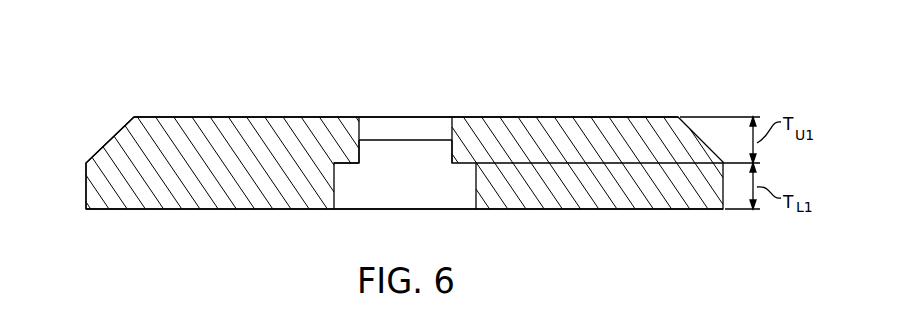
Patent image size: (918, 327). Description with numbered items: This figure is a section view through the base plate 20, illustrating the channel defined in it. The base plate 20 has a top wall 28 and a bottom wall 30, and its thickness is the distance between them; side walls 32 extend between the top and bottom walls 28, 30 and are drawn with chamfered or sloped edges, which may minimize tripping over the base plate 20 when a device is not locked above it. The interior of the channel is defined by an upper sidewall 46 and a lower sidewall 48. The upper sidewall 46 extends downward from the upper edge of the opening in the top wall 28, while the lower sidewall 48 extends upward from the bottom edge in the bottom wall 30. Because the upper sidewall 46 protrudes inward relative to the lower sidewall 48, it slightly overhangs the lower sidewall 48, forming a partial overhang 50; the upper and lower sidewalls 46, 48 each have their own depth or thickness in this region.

The base plate 20 is at (162, 82).
The top wall 28 is at (251, 117).
The bottom wall 30 is at (168, 209).
The side walls 32 is at (86, 172).
The upper sidewall 46 is at (361, 149).
The lower sidewall 48 is at (420, 178).
The partial overhang 50 is at (347, 165).